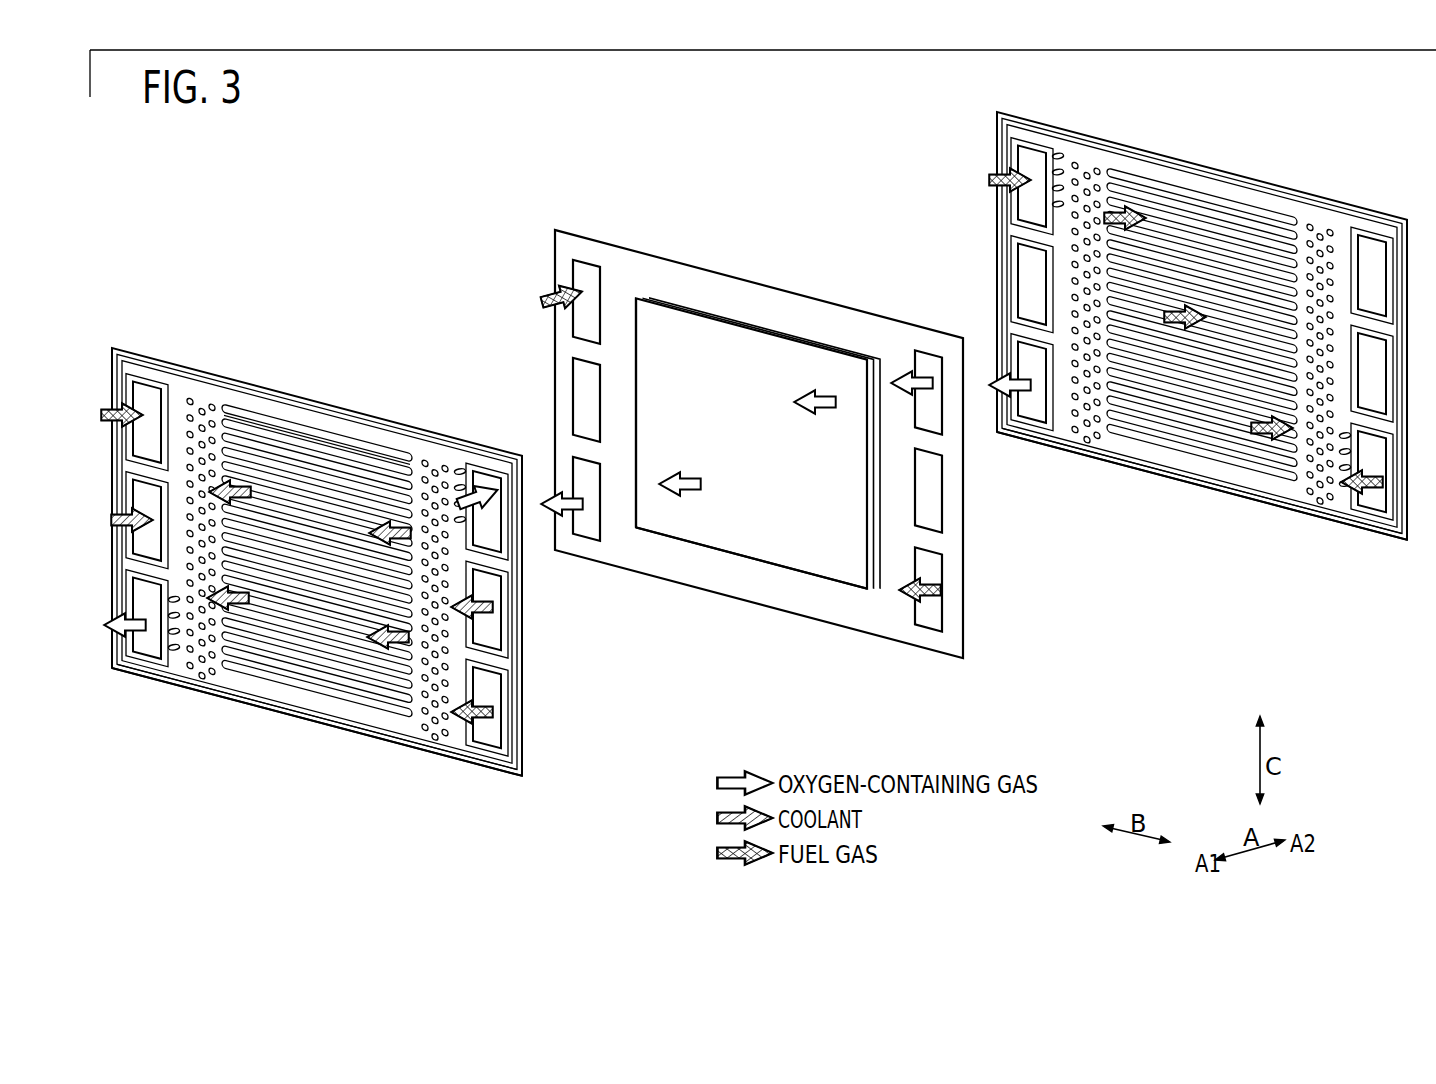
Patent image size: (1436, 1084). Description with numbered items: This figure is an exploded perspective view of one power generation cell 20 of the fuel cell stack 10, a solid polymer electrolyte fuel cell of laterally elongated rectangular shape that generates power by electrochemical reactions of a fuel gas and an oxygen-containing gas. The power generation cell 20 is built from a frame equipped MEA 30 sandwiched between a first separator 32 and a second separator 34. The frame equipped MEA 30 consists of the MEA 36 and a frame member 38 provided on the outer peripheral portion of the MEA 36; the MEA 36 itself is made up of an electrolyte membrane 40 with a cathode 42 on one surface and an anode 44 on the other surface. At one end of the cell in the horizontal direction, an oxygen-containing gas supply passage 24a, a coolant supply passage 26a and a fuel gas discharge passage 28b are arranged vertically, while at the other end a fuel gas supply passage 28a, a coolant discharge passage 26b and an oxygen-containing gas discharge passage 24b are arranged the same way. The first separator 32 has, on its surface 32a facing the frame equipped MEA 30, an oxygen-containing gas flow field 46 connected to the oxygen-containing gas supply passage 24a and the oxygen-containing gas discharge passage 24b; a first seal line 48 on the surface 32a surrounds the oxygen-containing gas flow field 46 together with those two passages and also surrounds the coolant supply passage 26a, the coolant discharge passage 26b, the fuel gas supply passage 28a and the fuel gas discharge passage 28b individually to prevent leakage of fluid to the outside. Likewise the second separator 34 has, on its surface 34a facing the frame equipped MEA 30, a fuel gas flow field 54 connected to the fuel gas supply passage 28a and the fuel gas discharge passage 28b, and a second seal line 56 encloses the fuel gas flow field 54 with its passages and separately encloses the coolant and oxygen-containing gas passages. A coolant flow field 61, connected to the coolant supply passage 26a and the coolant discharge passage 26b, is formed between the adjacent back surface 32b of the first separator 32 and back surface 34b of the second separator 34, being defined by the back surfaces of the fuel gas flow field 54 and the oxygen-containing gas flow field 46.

The fuel cell stack 10 is at (380, 140).
The power generation cell 20 is at (343, 140).
The oxygen-containing gas supply passage 24a is at (487, 485).
The oxygen-containing gas discharge passage 24b is at (145, 638).
The coolant supply passage 26a is at (490, 630).
The coolant discharge passage 26b is at (158, 515).
The fuel gas supply passage 28a is at (1031, 160).
The fuel gas discharge passage 28b is at (495, 728).
The frame equipped MEA 30 is at (550, 229).
The first separator 32 is at (114, 338).
The surface of the first separator 32a is at (413, 733).
The surface of the first separator 32b is at (387, 728).
The second separator 34 is at (994, 110).
The surface of the second separator 34a is at (1127, 440).
The surface of the second separator 34b is at (1132, 450).
The MEA 36 is at (839, 592).
The frame member 38 is at (772, 595).
The electrolyte membrane 40 is at (800, 558).
The cathode 42 is at (745, 555).
The anode 44 is at (882, 578).
The oxygen-containing gas flow field 46 is at (302, 450).
The first seal line 48 is at (133, 463).
The fuel gas flow field 54 is at (1165, 200).
The second seal line 56 is at (1387, 320).
The coolant flow field 61 is at (270, 435).